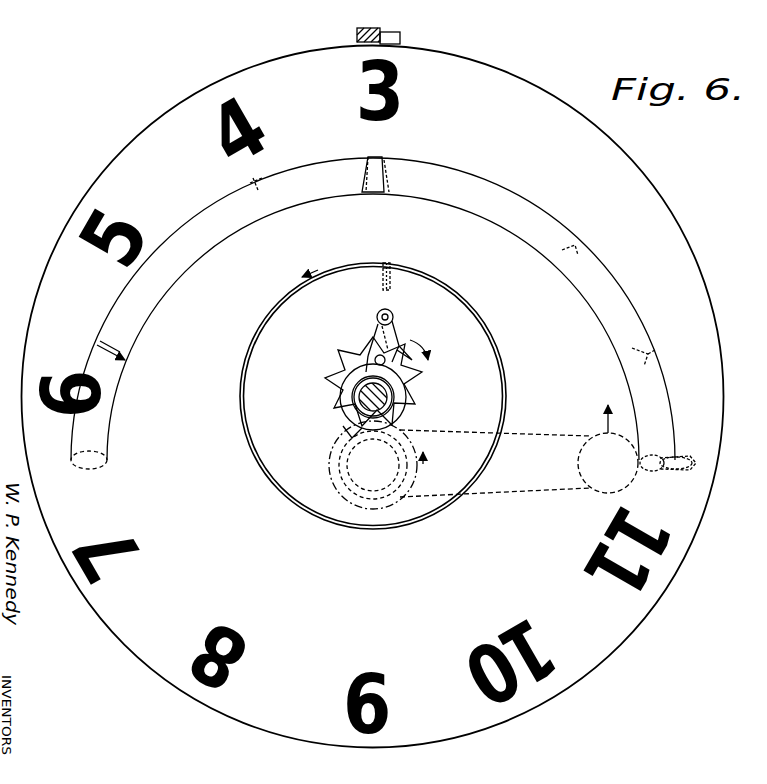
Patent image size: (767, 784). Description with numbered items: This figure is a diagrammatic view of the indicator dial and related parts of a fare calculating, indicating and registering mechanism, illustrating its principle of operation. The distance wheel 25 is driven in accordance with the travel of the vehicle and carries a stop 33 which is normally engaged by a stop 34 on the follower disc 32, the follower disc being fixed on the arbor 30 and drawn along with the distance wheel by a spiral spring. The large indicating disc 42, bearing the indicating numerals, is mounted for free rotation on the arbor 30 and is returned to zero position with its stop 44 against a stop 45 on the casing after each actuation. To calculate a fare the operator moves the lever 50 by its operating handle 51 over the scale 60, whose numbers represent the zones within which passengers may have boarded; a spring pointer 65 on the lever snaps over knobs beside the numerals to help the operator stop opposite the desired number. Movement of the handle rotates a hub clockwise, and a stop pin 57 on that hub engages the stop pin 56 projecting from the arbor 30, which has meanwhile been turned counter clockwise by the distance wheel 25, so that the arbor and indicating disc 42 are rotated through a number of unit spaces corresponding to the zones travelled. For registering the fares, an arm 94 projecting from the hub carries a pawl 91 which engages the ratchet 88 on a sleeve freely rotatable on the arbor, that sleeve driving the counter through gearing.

The distance wheel 25 is at (482, 314).
The arbor 30 is at (392, 392).
The follower disc 32 is at (483, 367).
The stop 33 is at (386, 263).
The stop 34 is at (392, 281).
The indicating disc 42 is at (714, 301).
The stop 44 is at (416, 37).
The stop 45 is at (357, 31).
The lever 50 is at (540, 436).
The operating handle 51 is at (578, 463).
The stop pin 56 is at (337, 373).
The stop pin 57 is at (390, 363).
The scale 60 is at (476, 195).
The spring pointer 65 is at (688, 462).
The ratchet 88 is at (330, 410).
The pawl 91 is at (396, 342).
The arm 94 is at (395, 333).